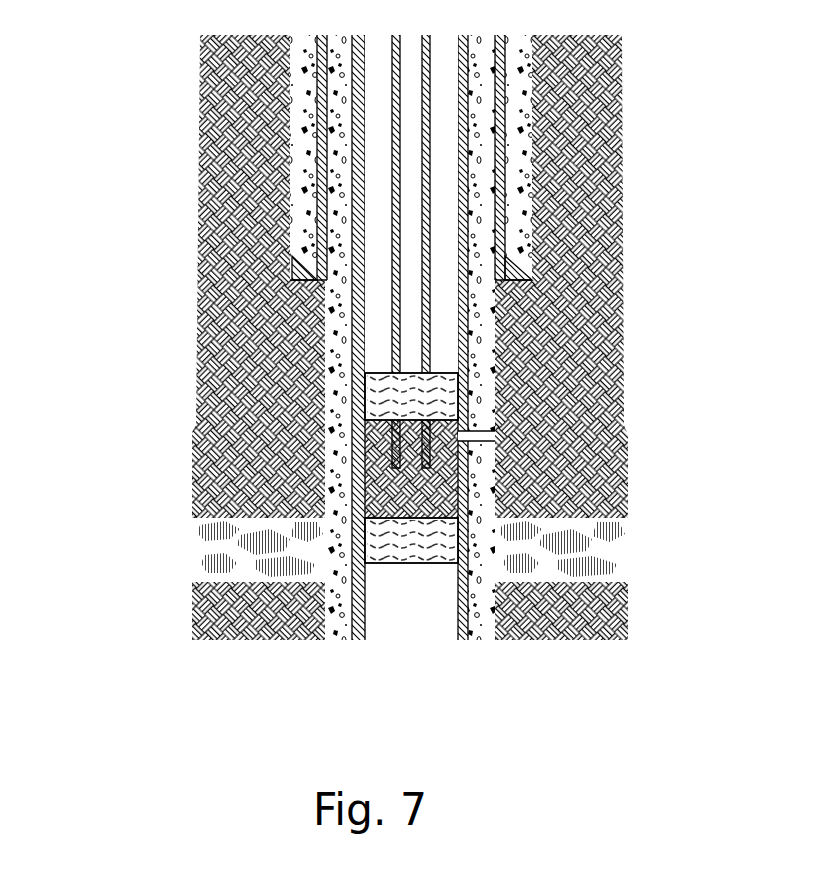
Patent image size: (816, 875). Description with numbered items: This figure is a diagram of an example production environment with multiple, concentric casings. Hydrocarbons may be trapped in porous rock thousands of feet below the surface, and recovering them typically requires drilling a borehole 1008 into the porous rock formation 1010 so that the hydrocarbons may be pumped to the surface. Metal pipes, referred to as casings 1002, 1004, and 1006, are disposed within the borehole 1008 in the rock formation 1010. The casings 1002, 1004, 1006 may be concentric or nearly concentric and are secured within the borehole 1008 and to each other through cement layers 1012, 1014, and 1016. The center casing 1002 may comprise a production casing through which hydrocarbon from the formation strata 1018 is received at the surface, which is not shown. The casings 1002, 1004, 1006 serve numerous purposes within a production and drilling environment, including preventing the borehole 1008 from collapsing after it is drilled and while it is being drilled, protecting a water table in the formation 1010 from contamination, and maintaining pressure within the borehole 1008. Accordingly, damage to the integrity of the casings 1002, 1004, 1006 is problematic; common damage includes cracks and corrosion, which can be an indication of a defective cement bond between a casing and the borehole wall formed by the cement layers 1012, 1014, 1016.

The casing 1002 is at (398, 368).
The casing 1004 is at (358, 240).
The casing 1006 is at (320, 88).
The borehole 1008 is at (527, 232).
The rock formation 1010 is at (590, 100).
The cement layer 1012 is at (373, 312).
The cement layer 1014 is at (338, 158).
The cement layer 1016 is at (303, 52).
The formation strata 1018 is at (587, 475).